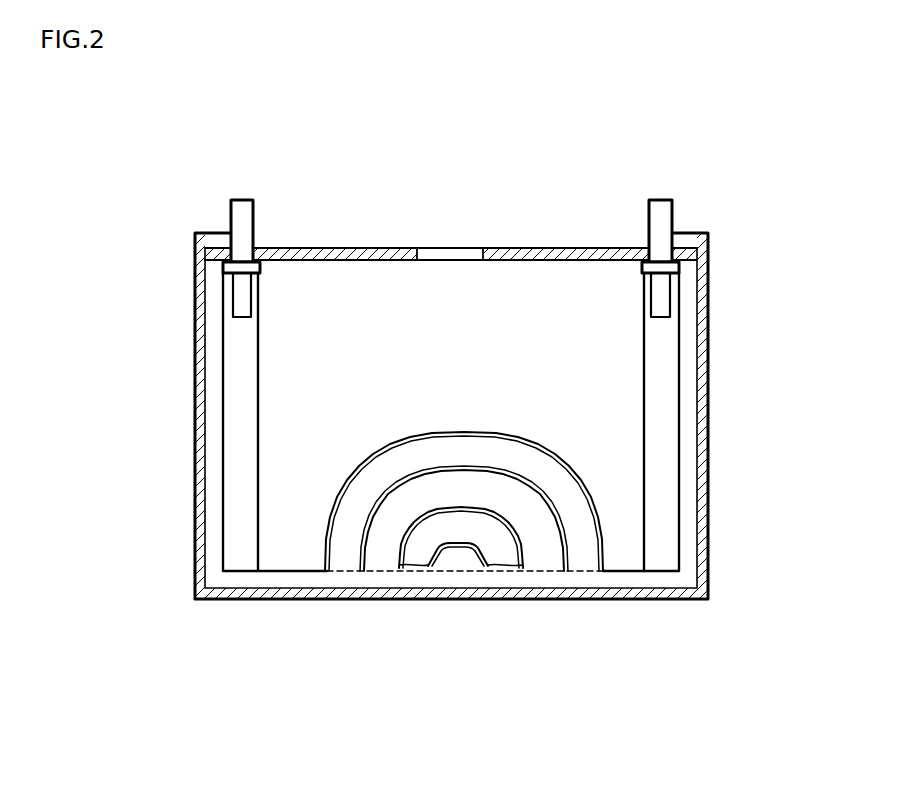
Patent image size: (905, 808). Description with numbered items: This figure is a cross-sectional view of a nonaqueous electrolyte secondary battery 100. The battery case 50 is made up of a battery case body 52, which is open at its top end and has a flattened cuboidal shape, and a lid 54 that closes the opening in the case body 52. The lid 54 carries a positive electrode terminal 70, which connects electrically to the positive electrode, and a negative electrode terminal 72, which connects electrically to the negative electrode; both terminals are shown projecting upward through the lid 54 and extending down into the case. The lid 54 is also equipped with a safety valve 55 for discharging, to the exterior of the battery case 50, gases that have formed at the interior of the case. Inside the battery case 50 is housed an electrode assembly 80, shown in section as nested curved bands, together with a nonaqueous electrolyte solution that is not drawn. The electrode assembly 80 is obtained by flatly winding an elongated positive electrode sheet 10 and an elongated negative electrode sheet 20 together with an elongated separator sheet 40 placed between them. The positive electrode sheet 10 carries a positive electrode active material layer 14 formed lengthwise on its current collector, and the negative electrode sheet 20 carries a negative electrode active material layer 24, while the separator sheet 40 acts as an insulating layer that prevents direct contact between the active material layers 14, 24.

The nonaqueous electrolyte secondary battery 100 is at (703, 133).
The positive electrode sheet 10 is at (347, 555).
The positive electrode active material layer 14 is at (452, 569).
The negative electrode sheet 20 is at (420, 550).
The negative electrode active material layer 24 is at (461, 605).
The separator sheet 40 is at (290, 550).
The battery case 50 is at (708, 415).
The battery case body 52 is at (700, 550).
The lid 54 is at (576, 255).
The safety valve 55 is at (447, 255).
The positive electrode terminal 70 is at (241, 208).
The negative electrode terminal 72 is at (659, 215).
The electrode assembly 80 is at (623, 572).